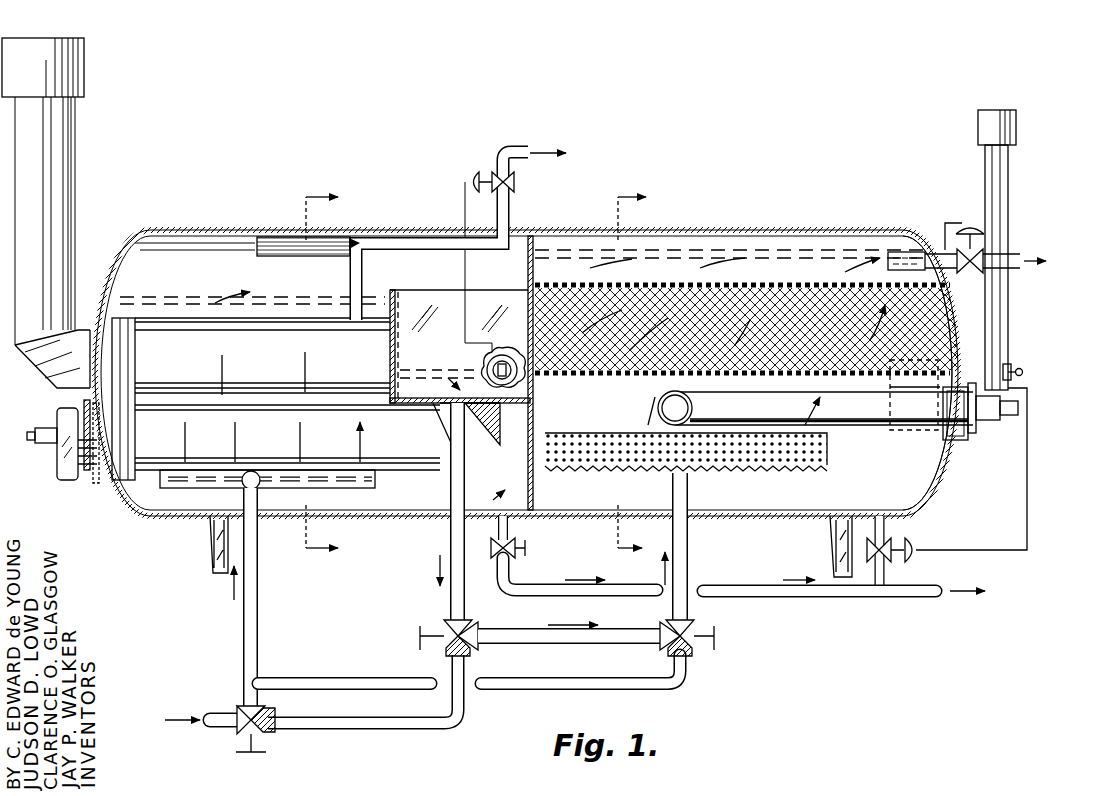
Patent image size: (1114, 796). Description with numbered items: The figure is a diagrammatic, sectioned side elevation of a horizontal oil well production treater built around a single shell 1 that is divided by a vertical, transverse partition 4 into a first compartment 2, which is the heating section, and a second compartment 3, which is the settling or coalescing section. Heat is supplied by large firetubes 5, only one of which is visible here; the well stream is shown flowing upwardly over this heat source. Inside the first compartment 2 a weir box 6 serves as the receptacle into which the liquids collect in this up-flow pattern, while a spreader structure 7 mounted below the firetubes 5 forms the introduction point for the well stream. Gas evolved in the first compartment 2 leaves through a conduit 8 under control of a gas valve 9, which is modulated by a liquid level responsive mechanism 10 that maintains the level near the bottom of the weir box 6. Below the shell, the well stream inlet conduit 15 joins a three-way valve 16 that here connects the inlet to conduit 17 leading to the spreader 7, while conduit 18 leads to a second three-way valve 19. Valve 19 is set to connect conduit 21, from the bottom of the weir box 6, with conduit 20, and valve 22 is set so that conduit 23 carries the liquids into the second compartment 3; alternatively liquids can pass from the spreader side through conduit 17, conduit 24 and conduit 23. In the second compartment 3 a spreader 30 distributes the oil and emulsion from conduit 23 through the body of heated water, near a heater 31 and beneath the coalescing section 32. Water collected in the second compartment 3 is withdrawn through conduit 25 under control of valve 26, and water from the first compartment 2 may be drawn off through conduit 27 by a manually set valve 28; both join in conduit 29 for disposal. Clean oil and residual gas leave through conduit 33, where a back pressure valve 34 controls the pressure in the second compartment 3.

The shell 1 is at (742, 232).
The first compartment 2 is at (162, 255).
The second compartment 3 is at (880, 218).
The partition 4 is at (574, 530).
The firetubes 5 is at (157, 463).
The weir box 6 is at (398, 305).
The spreader structure 7 is at (377, 483).
The conduit 8 is at (497, 224).
The gas valve 9 is at (498, 176).
The liquid level responsive mechanism 10 is at (490, 366).
The well stream inlet conduit 15 is at (229, 712).
The three-way valve 16 is at (238, 733).
The conduit 17 is at (243, 657).
The conduit 18 is at (350, 731).
The three-way valve 19 is at (445, 628).
The conduit 20 is at (487, 630).
The conduit 21 is at (450, 530).
The valve 22 is at (695, 630).
The conduit 23 is at (704, 548).
The conduit 24 is at (509, 690).
The conduit 25 is at (886, 530).
The valve 26 is at (892, 565).
The conduit 27 is at (510, 527).
The valve 28 is at (512, 560).
The conduit 29 is at (883, 598).
The spreader 30 is at (580, 462).
The heater 31 is at (868, 428).
The coalescing section 32 is at (946, 320).
The conduit 33 is at (942, 245).
The back pressure valve 34 is at (962, 268).